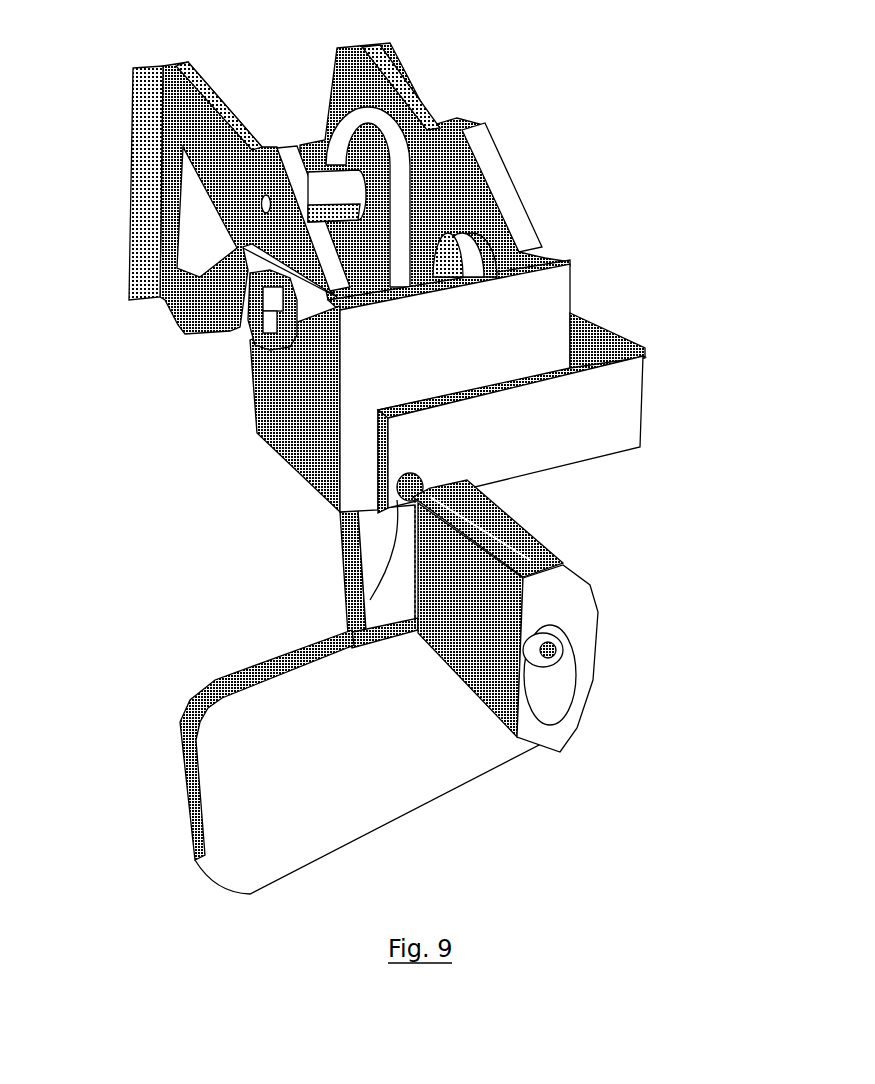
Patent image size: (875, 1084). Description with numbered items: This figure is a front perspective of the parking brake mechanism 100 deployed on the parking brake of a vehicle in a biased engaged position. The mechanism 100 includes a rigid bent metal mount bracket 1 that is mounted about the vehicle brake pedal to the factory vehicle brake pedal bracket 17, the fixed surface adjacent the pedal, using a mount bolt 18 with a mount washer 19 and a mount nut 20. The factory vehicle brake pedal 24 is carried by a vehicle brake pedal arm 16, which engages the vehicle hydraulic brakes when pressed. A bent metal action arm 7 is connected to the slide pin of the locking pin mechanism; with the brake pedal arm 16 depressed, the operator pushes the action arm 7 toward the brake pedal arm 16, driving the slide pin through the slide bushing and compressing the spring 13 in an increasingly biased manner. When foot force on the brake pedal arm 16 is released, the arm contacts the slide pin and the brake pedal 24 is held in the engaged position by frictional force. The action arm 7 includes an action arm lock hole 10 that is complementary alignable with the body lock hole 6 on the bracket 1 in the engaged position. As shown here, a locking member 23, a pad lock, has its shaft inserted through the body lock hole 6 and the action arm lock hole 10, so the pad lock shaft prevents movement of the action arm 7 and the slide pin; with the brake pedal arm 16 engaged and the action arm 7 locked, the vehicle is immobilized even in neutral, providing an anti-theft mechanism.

The mount bracket 1 is at (255, 420).
The body lock hole 6 is at (312, 550).
The action arm 7 is at (653, 401).
The action arm lock hole 10 is at (397, 497).
The compression spring 13 is at (582, 338).
The vehicle brake pedal arm 16 is at (330, 133).
The vehicle brake pedal bracket 17 is at (125, 200).
The mount bolt 18 is at (233, 332).
The mount washer 19 is at (484, 225).
The mount nut 20 is at (452, 240).
The locking member 23 is at (542, 538).
The vehicle brake pedal 24 is at (185, 698).
The parking brake mechanism 100 is at (422, 468).